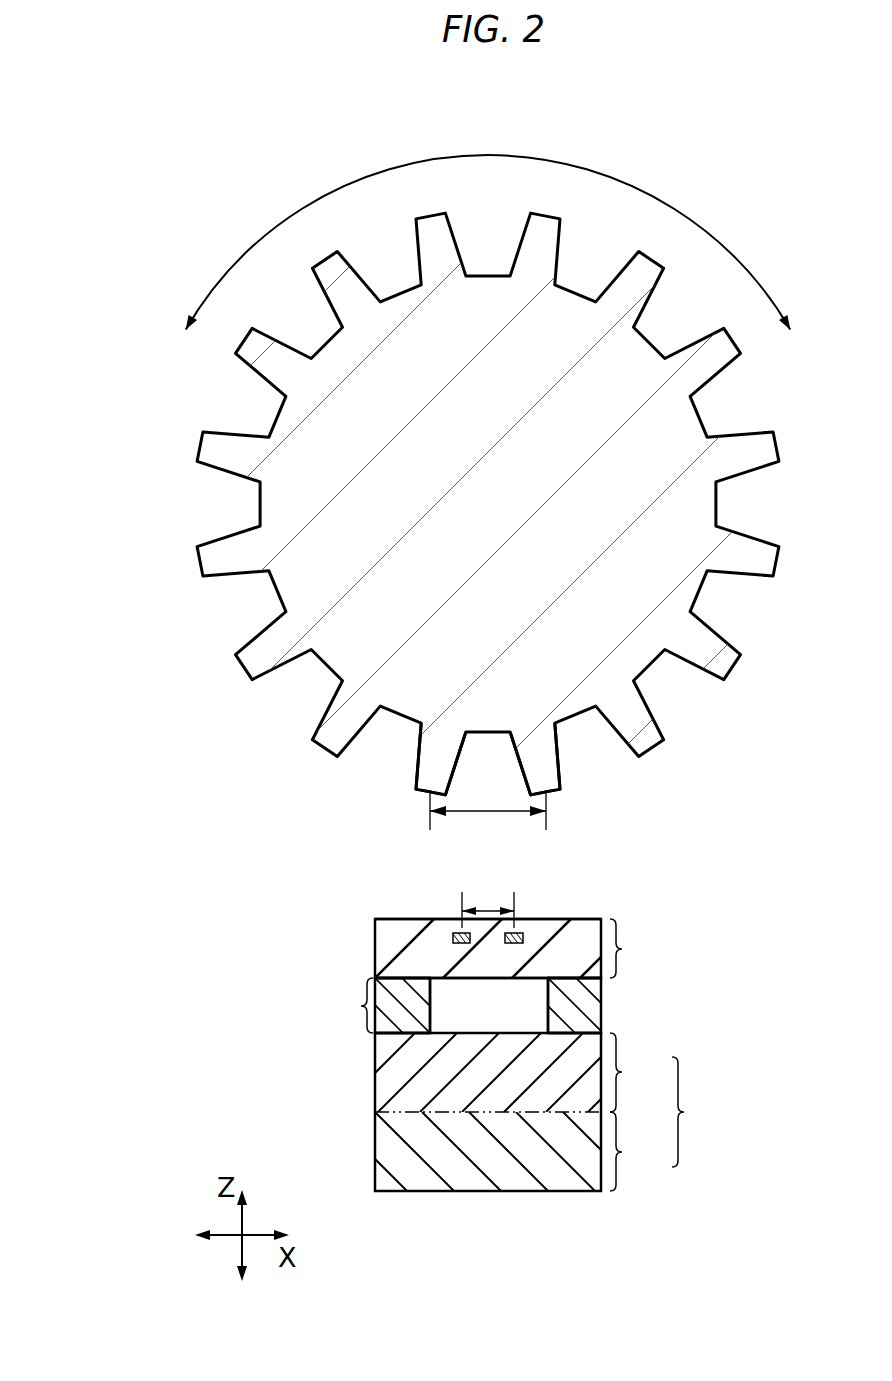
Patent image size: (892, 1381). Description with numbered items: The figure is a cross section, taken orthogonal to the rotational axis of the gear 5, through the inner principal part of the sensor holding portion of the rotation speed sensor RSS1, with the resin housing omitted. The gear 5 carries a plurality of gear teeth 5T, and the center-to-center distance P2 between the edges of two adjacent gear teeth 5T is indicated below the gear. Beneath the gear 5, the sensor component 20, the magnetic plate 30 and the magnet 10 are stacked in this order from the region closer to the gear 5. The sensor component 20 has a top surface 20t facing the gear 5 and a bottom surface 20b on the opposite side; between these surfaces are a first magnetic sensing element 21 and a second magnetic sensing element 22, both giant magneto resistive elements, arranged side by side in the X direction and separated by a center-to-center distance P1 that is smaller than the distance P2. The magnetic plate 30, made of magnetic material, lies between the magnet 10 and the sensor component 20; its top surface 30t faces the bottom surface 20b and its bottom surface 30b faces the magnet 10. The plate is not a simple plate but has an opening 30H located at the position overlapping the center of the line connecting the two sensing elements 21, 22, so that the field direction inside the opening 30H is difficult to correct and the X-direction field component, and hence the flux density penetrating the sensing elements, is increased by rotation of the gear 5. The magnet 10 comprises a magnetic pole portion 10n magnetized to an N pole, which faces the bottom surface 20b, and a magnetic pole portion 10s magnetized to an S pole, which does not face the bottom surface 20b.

The gear 5 is at (693, 510).
The gear teeth 5T is at (420, 779).
The center-to-center distance between edges of two adjacent gear teeth P2 is at (488, 816).
The rotation speed sensor RSS1 is at (206, 1058).
The sensor component 20 is at (458, 954).
The top surface 20t is at (412, 910).
The bottom surface 20b is at (531, 988).
The magnetic sensing element 21 is at (455, 933).
The magnetic sensing element 22 is at (521, 932).
The center-to-center distance between the magnetic sensing elements P1 is at (488, 899).
The magnetic plate 30 is at (437, 1101).
The top surface 30t is at (396, 971).
The bottom surface 30b is at (387, 1041).
The opening 30H is at (488, 1012).
The magnet 10 is at (523, 1112).
The magnetic pole portion 10n is at (512, 1062).
The magnetic pole portion 10s is at (498, 1162).